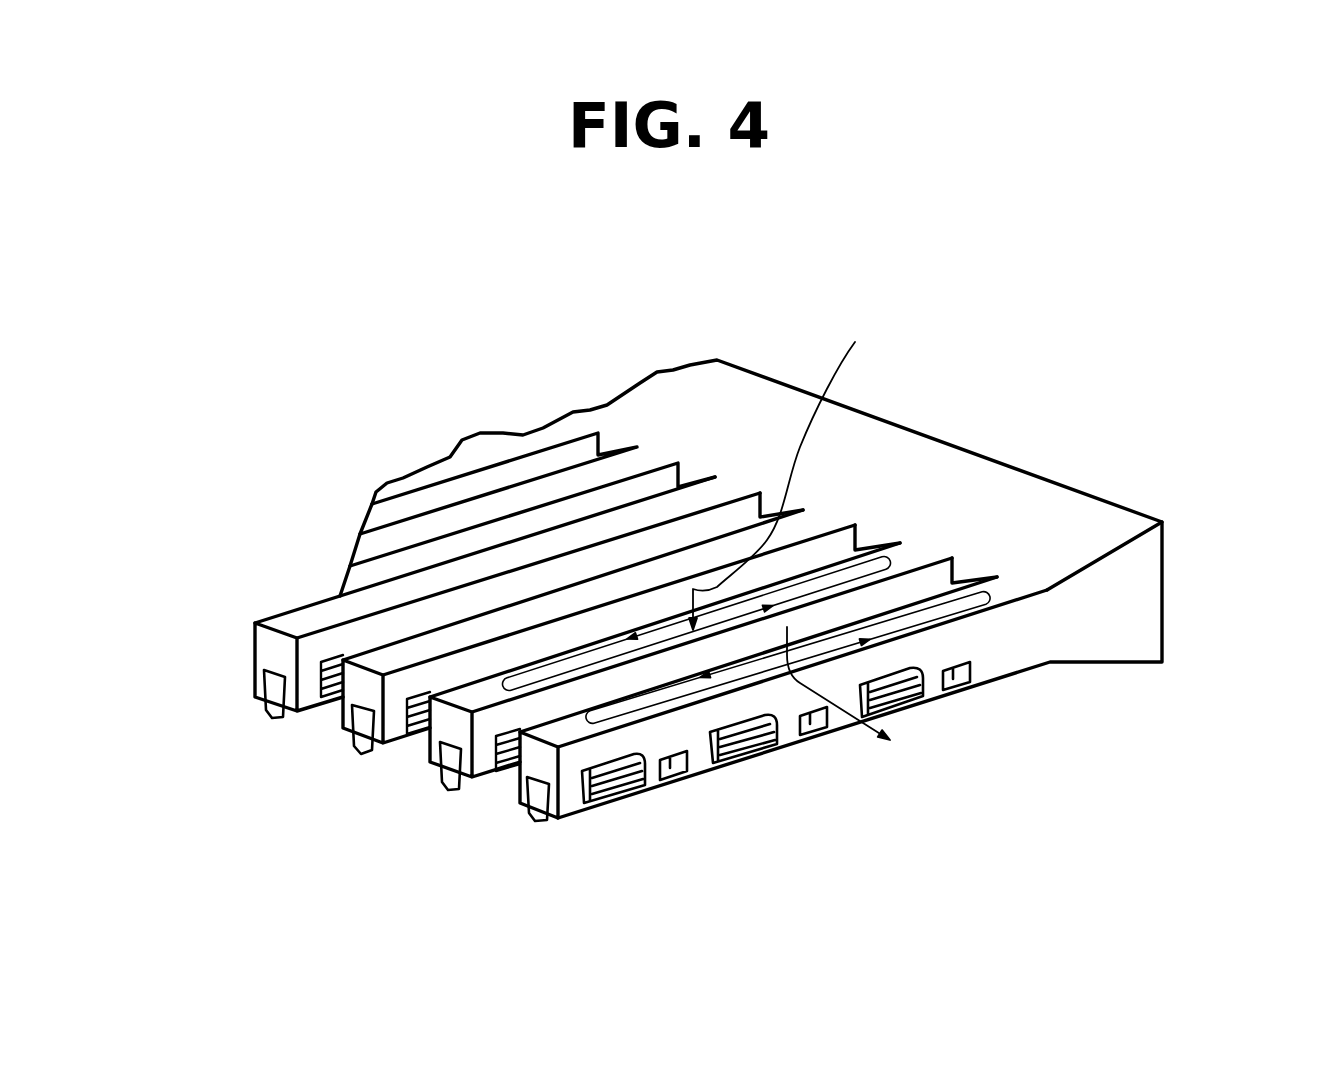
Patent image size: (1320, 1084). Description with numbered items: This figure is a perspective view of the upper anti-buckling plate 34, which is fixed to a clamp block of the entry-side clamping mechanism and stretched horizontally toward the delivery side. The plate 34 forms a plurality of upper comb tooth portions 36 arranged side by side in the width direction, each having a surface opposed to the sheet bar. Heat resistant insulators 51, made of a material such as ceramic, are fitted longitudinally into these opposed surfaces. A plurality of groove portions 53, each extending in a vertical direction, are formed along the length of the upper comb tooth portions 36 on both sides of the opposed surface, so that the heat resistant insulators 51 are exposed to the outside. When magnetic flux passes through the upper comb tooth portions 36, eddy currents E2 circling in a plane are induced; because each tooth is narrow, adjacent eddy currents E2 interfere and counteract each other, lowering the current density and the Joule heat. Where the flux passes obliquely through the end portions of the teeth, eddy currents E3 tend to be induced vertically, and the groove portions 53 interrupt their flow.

The upper anti-buckling plate 34 is at (962, 447).
The upper comb tooth portions 36 is at (370, 660).
The heat resistant insulators 51 is at (272, 717).
The groove portions 53 is at (675, 768).
The eddy currents E2 is at (872, 562).
The eddy currents E3 is at (988, 668).